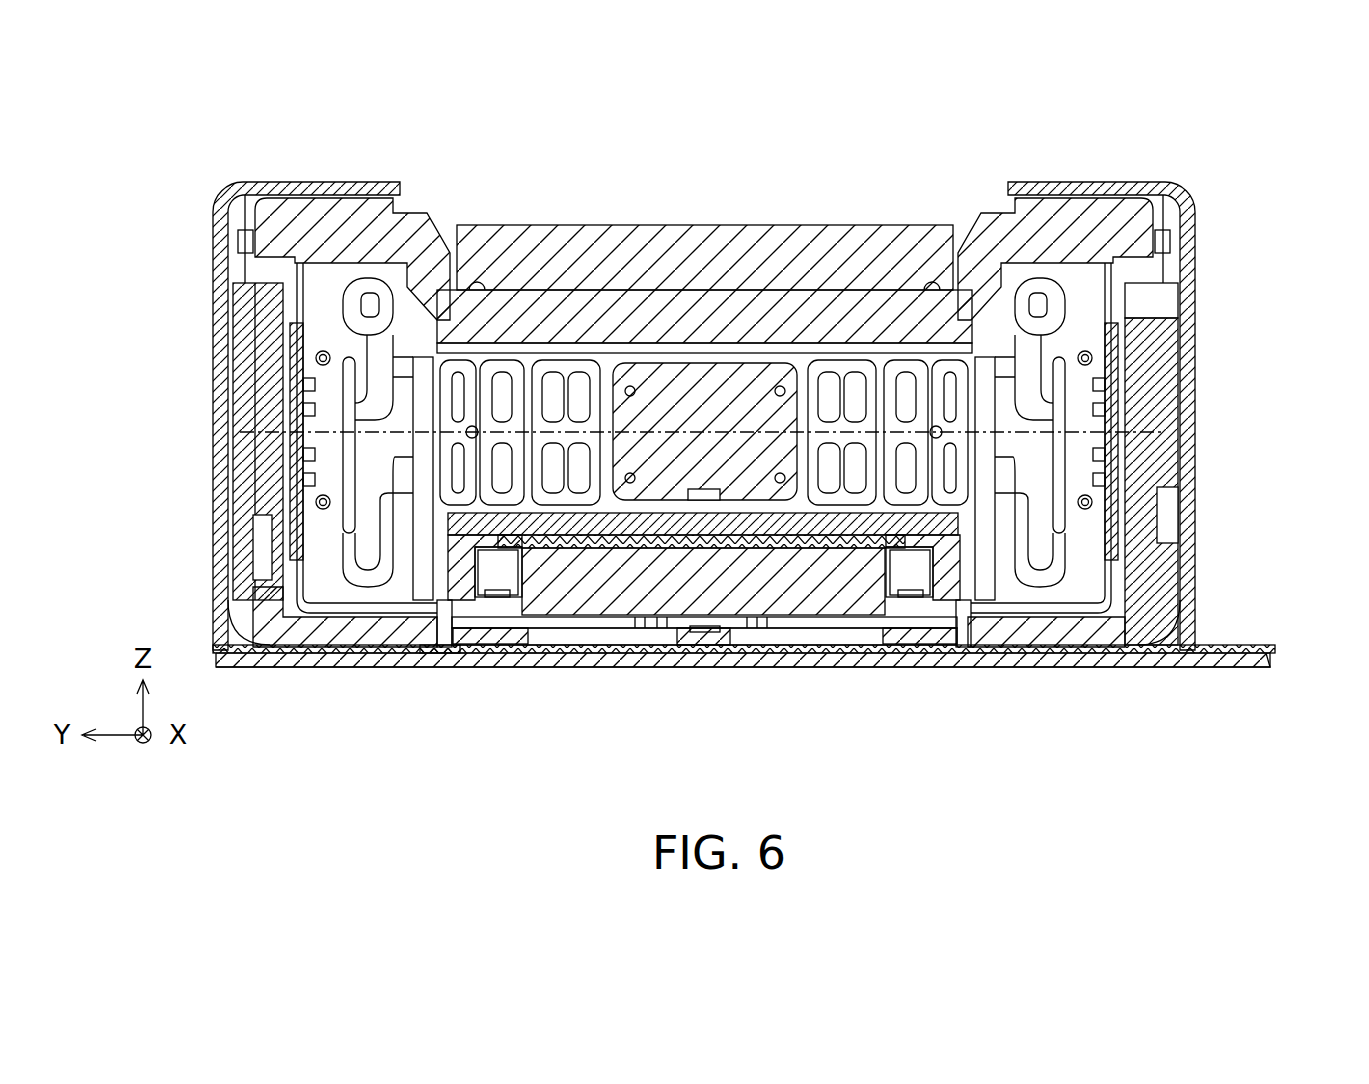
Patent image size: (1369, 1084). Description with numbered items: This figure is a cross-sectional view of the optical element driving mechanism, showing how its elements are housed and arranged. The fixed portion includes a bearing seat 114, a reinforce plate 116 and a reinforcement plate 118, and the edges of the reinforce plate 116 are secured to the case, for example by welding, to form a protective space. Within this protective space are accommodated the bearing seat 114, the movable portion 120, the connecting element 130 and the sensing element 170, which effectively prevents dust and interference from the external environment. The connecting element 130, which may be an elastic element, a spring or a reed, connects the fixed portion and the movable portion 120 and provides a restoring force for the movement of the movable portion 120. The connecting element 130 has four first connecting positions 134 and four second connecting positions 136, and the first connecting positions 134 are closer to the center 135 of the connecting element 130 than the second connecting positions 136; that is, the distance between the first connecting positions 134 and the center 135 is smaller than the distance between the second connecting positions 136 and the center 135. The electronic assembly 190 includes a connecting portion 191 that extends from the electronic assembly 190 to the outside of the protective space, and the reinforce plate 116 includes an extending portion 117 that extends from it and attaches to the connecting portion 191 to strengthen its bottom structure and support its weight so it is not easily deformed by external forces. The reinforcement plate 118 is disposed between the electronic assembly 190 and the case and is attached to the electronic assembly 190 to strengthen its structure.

The bearing seat 114 is at (1165, 430).
The reinforce plate 116 is at (535, 670).
The extending portion 117 is at (1252, 665).
The reinforcement plate 118 is at (243, 414).
The movable portion 120 is at (1068, 222).
The connecting element 130 is at (517, 352).
The first connecting positions 134 is at (630, 386).
The center 135 is at (704, 548).
The second connecting positions 136 is at (318, 354).
The sensing element 170 is at (705, 640).
The electronic assembly 190 is at (441, 660).
The connecting portion 191 is at (1252, 648).